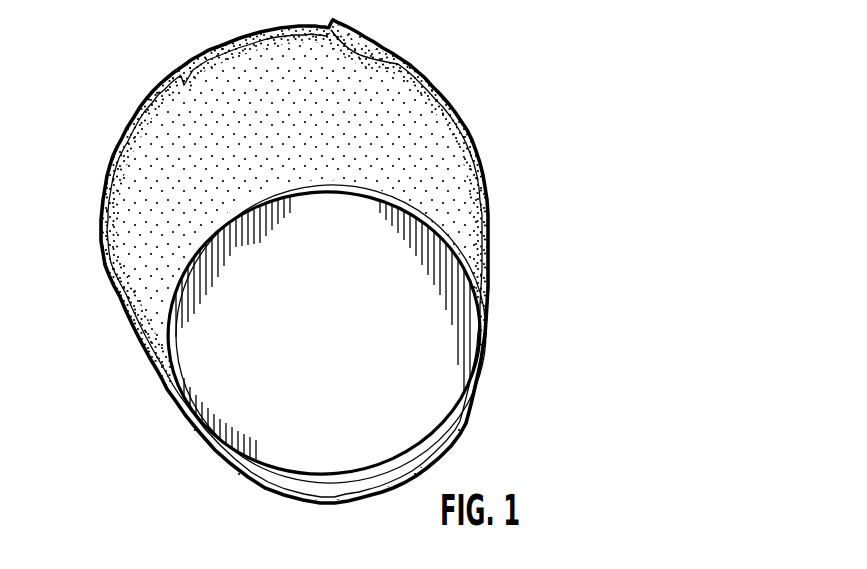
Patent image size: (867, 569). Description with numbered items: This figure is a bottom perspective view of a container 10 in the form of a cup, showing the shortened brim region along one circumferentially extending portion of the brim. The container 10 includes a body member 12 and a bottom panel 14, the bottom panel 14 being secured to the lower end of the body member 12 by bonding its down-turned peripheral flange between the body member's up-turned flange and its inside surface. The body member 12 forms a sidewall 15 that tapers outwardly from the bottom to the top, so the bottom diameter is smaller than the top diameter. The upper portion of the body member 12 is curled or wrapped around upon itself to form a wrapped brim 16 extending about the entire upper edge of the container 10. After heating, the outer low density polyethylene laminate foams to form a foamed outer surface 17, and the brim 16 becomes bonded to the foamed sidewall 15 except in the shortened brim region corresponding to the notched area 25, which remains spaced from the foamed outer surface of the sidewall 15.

The container 10 is at (508, 166).
The body member 12 is at (143, 265).
The bottom panel 14 is at (415, 372).
The sidewall 15 is at (160, 185).
The brim 16 is at (158, 77).
The foamed outer surface 17 is at (398, 136).
The notched area 25 is at (331, 31).